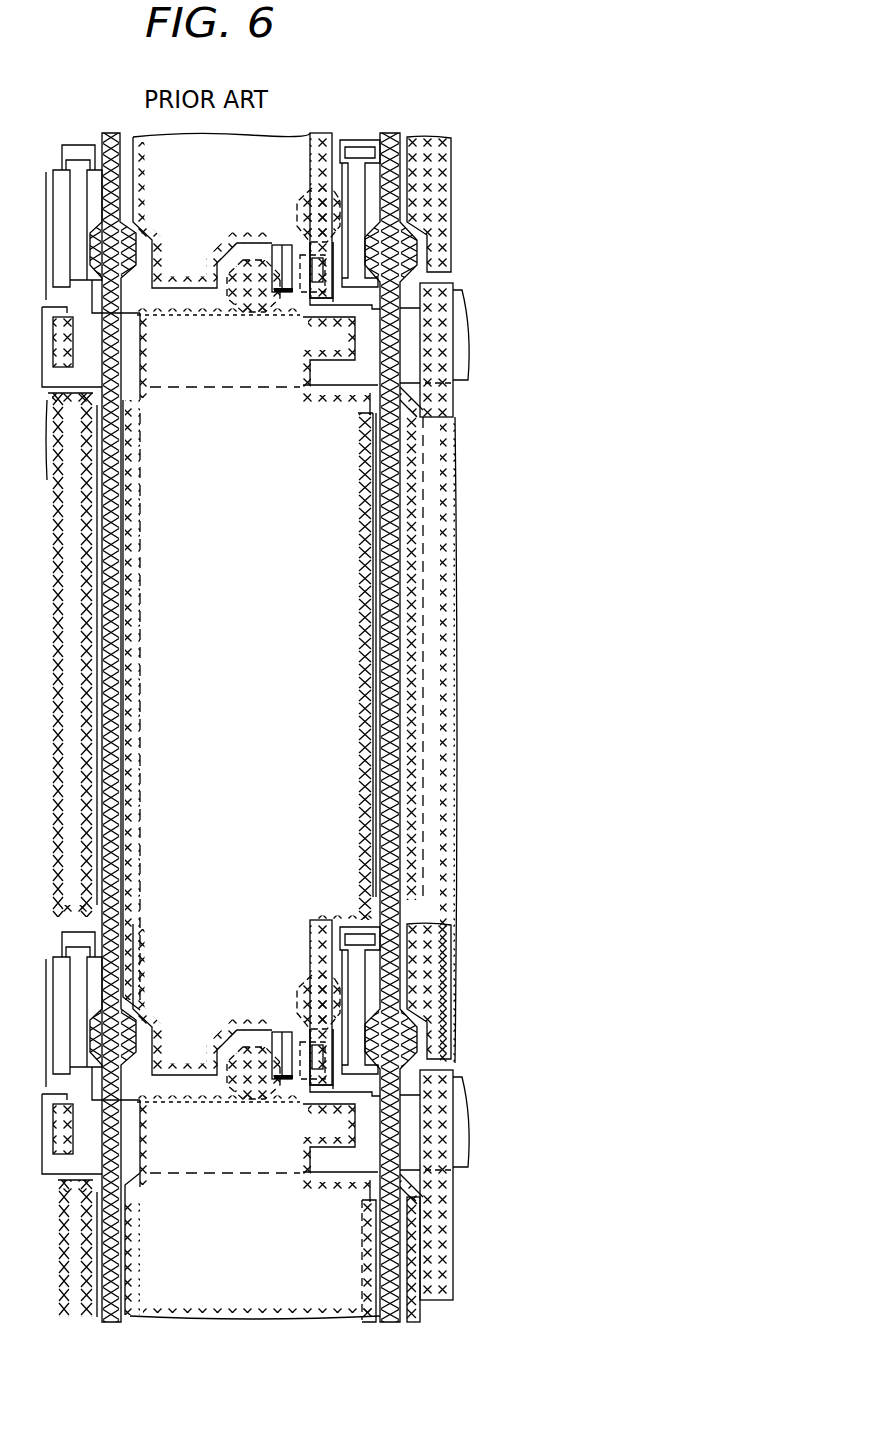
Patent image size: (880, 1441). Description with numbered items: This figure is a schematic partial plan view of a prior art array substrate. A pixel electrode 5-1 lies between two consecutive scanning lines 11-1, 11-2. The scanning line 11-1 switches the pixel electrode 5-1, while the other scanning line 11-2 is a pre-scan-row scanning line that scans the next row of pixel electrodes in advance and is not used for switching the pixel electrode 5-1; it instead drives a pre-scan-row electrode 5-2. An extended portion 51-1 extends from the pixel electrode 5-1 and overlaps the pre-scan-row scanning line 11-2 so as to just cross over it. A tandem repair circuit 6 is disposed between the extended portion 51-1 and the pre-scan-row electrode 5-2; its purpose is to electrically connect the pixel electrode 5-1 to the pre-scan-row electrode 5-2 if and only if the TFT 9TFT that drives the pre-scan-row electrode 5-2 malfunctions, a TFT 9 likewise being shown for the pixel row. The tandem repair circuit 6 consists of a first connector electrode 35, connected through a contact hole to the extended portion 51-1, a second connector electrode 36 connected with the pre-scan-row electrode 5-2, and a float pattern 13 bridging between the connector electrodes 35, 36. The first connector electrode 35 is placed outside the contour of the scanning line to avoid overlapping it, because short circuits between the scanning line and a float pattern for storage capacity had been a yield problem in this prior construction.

The pixel electrode 5-1 is at (281, 780).
The pre-scan-row electrode 5-2 is at (221, 210).
The tandem repair circuit 6 is at (300, 250).
The TFT 9 is at (393, 1007).
The TFT 9TFT is at (356, 134).
The scanning line 11-1 is at (466, 1185).
The pre-scan-row scanning line 11-2 is at (463, 351).
The float pattern 13 is at (295, 298).
The first connector electrode 35 is at (278, 239).
The second connector electrode 36 is at (318, 250).
The extended portion 51-1 is at (140, 317).